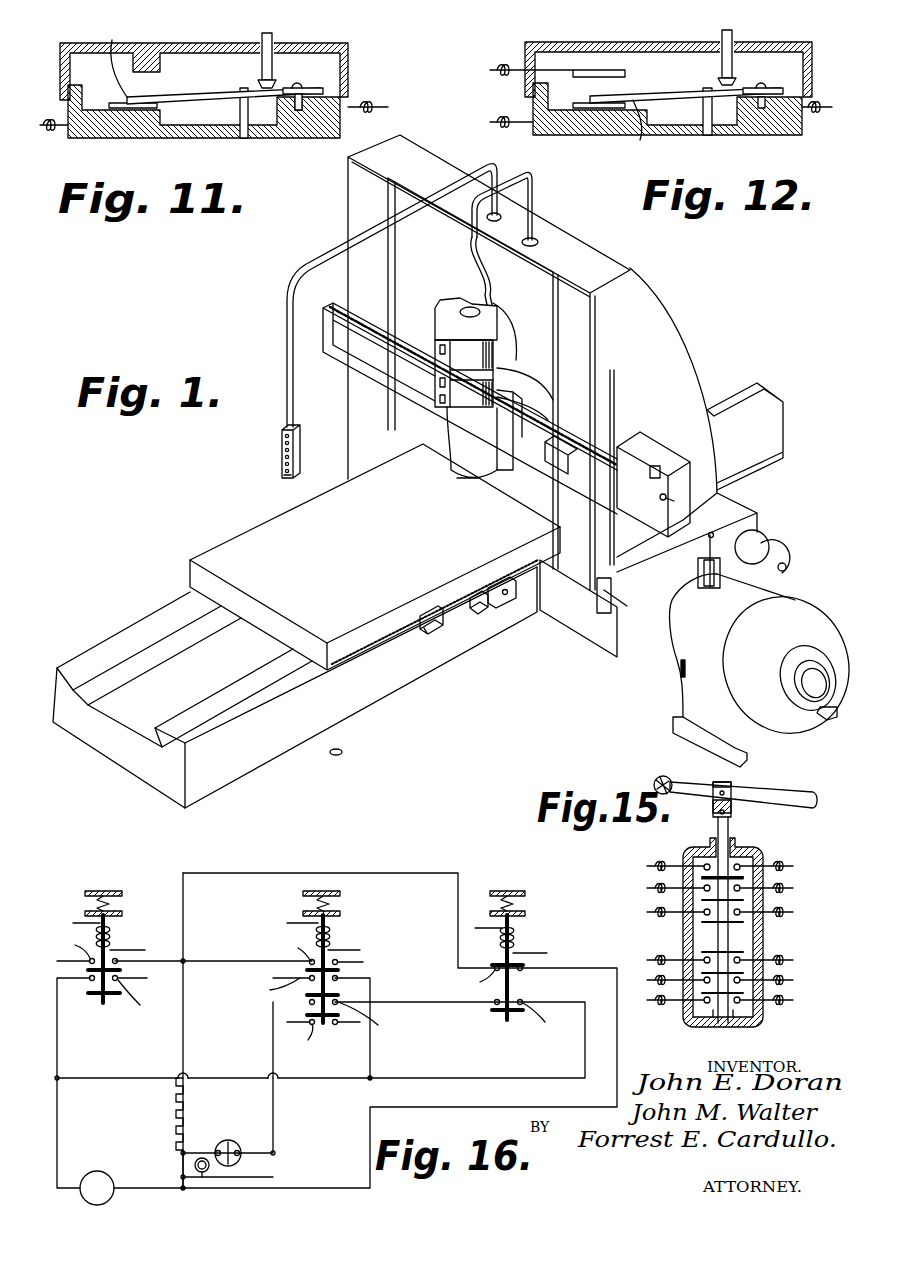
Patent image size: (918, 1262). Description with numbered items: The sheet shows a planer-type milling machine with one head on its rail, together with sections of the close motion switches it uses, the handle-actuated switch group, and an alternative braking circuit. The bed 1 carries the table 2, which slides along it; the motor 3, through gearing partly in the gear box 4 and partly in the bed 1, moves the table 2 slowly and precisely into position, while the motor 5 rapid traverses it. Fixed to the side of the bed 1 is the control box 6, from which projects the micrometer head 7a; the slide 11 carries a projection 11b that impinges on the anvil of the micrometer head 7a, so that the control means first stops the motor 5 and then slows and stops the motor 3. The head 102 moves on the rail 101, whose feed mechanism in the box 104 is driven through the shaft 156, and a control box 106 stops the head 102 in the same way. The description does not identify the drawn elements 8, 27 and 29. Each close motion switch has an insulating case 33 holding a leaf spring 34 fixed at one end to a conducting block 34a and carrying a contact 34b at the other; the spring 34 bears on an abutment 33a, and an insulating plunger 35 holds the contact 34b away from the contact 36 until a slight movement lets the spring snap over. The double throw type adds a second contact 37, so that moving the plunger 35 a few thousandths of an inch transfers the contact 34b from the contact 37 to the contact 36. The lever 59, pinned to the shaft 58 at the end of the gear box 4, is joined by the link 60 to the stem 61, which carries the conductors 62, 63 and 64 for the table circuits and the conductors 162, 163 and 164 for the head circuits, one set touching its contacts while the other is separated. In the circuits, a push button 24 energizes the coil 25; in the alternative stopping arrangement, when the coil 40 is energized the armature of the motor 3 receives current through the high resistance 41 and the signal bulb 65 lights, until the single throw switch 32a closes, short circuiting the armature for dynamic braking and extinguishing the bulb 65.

In FIG. 1, the bed 1 is at (107, 767).
In FIG. 1, the table 2 is at (230, 540).
In FIG. 1, the positioning motor 3 is at (773, 537).
In FIG. 16, the positioning motor 3 is at (97, 1188).
In FIG. 1, the gear box 4 is at (742, 508).
In FIG. 1, the rapid traverse motor 5 is at (683, 672).
In FIG. 1, the control box 6 is at (505, 604).
In FIG. 1, the micrometer head 7a is at (478, 610).
In FIG. 1, the table lock 8 is at (332, 673).
In FIG. 1, the slide 11 is at (431, 628).
In FIG. 1, the projection 11b is at (424, 633).
In FIG. 1, the push button 24 is at (283, 463).
In FIG. 1, the indicator foot 27 is at (282, 476).
In FIG. 16, the coil 25 is at (102, 959).
In FIG. 16, the relay 29 is at (322, 977).
In FIG. 16, the single throw switch 32a is at (247, 1137).
In FIG. 11, the case 33 is at (318, 133).
In FIG. 12, the case 33 is at (760, 133).
In FIG. 11, the abutment 33a is at (240, 113).
In FIG. 12, the abutment 33a is at (703, 100).
In FIG. 11, the leaf spring 34 is at (193, 91).
In FIG. 12, the leaf spring 34 is at (650, 88).
In FIG. 11, the conducting block 34a is at (320, 88).
In FIG. 11, the contact 34b is at (102, 57).
In FIG. 12, the contact 34b is at (642, 136).
In FIG. 11, the plunger 35 is at (268, 62).
In FIG. 12, the plunger 35 is at (730, 60).
In FIG. 11, the contact 36 is at (140, 113).
In FIG. 12, the contact 36 is at (597, 108).
In FIG. 12, the second contact 37 is at (583, 69).
In FIG. 16, the coil 40 is at (508, 967).
In FIG. 16, the high resistance 41 is at (176, 1127).
In FIG. 1, the shaft 58 is at (600, 587).
In FIG. 15, the shaft 58 is at (662, 778).
In FIG. 1, the lever 59 is at (610, 610).
In FIG. 15, the lever 59 is at (793, 783).
In FIG. 1, the link 60 is at (593, 613).
In FIG. 15, the link 60 is at (731, 803).
In FIG. 1, the stem 61 is at (617, 610).
In FIG. 15, the stem 61 is at (713, 828).
In FIG. 15, the conductor 62 is at (710, 953).
In FIG. 15, the conductor 63 is at (753, 973).
In FIG. 15, the conductor 64 is at (707, 993).
In FIG. 16, the signal bulb 65 is at (202, 1178).
In FIG. 1, the rail 101 is at (362, 378).
In FIG. 1, the head 102 is at (445, 468).
In FIG. 1, the box 104 is at (633, 463).
In FIG. 1, the control box 106 is at (548, 478).
In FIG. 1, the shaft 156 is at (613, 407).
In FIG. 15, the conductor 162 is at (753, 873).
In FIG. 15, the conductor 163 is at (680, 900).
In FIG. 15, the conductor 164 is at (753, 923).